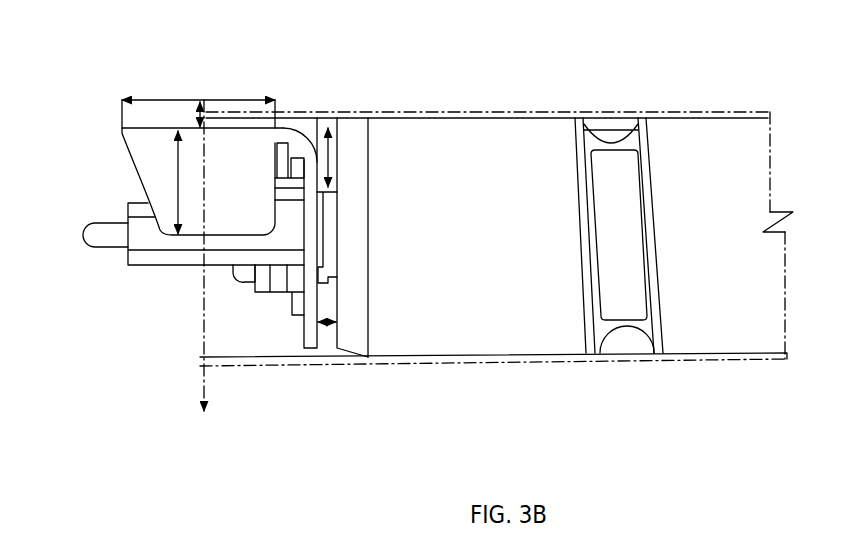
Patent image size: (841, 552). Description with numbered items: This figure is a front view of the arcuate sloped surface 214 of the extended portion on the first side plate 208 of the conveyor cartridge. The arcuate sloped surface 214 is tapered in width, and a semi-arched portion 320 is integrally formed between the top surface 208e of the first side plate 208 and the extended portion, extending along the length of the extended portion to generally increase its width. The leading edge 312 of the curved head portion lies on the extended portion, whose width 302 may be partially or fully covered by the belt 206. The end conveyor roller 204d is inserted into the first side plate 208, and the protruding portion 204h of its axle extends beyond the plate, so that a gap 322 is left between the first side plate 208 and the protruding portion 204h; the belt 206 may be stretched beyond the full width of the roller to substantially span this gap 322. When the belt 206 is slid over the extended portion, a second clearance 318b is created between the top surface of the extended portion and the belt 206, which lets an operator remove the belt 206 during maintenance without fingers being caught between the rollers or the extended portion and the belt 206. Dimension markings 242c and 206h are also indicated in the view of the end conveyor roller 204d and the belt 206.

The end conveyor roller 204d is at (503, 313).
The semi-arched portion 320 is at (317, 150).
The arcuate sloped surface 214 is at (137, 171).
The protruding portion of the axle 204h is at (147, 253).
The leading edge 312 is at (192, 242).
The first side plate 208 is at (316, 216).
The top surface of the first side plate 208e is at (331, 128).
The gap 322 is at (337, 318).
The dimension 242c is at (168, 128).
The second clearance 318b is at (197, 112).
The width of the extended portion 302 is at (210, 115).
The belt 206 is at (201, 319).
The centerline height 206h is at (276, 99).